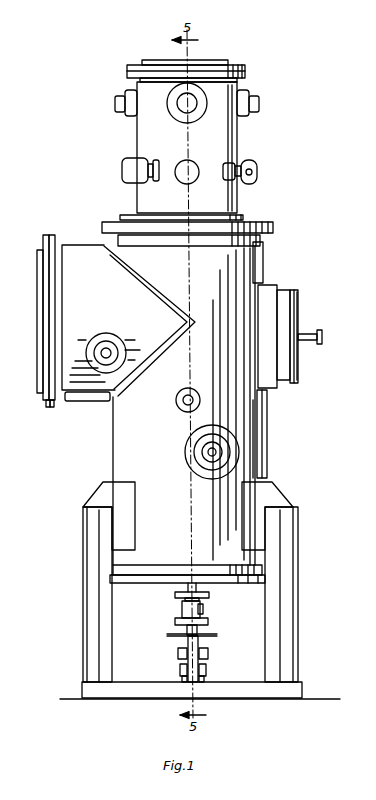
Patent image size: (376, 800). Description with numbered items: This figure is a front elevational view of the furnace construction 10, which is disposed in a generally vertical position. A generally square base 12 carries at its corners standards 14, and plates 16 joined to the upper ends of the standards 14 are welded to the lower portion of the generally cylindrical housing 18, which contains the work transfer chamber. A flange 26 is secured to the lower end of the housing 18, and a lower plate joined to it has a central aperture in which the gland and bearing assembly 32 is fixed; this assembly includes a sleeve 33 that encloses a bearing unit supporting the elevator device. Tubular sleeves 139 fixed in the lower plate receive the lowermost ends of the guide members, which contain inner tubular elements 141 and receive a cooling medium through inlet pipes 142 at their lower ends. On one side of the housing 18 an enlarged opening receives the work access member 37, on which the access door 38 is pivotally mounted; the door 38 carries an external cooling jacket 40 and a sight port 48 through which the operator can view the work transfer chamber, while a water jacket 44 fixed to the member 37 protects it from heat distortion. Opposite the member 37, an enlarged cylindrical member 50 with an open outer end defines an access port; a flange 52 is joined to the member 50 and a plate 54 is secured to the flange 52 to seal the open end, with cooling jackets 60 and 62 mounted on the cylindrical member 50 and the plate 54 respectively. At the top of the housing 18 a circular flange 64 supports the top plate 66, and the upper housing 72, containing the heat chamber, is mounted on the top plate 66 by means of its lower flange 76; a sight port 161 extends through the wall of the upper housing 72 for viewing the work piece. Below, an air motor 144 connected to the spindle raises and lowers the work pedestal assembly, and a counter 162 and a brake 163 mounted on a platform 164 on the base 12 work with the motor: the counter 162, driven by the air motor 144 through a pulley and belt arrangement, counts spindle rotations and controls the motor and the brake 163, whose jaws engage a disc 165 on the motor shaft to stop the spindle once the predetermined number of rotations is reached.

The furnace construction 10 is at (290, 198).
The base 12 is at (109, 694).
The standards 14 is at (93, 610).
The plates 16 is at (103, 481).
The housing 18 is at (263, 416).
The flange 26 is at (160, 573).
The gland and bearing assembly 32 is at (180, 612).
The sleeve 33 is at (208, 615).
The work access member 37 is at (284, 290).
The access door 38 is at (298, 376).
The external cooling jacket 40 is at (300, 312).
The water jacket 44 is at (266, 288).
The sight port 48 is at (321, 336).
The enlarged cylindrical member 50 is at (80, 246).
The flange 52 is at (55, 236).
The plate 54 is at (47, 236).
The cooling jacket 60 is at (80, 396).
The cooling jacket 62 is at (40, 294).
The circular flange 64 is at (274, 232).
The top plate 66 is at (255, 224).
The upper housing 72 is at (130, 216).
The lower flange 76 is at (238, 217).
The tubular sleeves 139 is at (186, 591).
The inner tubular elements 141 is at (203, 612).
The inlet pipes 142 is at (184, 601).
The air motor 144 is at (178, 680).
The sight port 161 is at (183, 183).
The counter 162 is at (184, 655).
The brake 163 is at (180, 634).
The platform 164 is at (196, 680).
The disc 165 is at (200, 636).